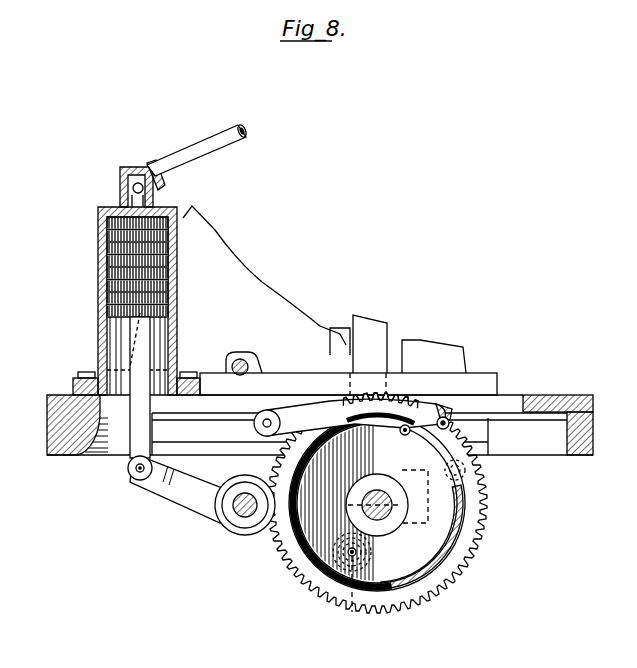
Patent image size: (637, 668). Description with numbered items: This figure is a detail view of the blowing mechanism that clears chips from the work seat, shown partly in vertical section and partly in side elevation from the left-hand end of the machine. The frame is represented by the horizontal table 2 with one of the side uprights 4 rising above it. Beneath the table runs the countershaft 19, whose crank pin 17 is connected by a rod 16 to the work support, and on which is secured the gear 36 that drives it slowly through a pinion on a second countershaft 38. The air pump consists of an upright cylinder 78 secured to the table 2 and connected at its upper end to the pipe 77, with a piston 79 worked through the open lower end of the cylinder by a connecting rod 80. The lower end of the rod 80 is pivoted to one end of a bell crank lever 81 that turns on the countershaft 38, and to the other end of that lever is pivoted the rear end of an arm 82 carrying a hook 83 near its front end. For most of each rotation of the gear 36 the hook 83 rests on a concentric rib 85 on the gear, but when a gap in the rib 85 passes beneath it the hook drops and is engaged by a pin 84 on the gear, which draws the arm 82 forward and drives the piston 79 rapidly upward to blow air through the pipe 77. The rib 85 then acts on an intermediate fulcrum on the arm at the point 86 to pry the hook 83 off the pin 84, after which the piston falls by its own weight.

The horizontal table 2 is at (582, 394).
The side upright 4 is at (262, 297).
The rod 16 is at (370, 338).
The crank pin 17 is at (341, 611).
The countershaft 19 is at (388, 528).
The gear 36 is at (455, 553).
The countershaft 38 is at (235, 517).
The pipe 77 is at (207, 153).
The cylinder 78 is at (96, 333).
The piston 79 is at (96, 256).
The connecting rod 80 is at (136, 366).
The bell crank lever 81 is at (182, 491).
The arm 82 is at (292, 418).
The hook 83 is at (446, 420).
The pin 84 is at (406, 437).
The concentric rib 85 is at (293, 567).
The point 86 is at (340, 423).